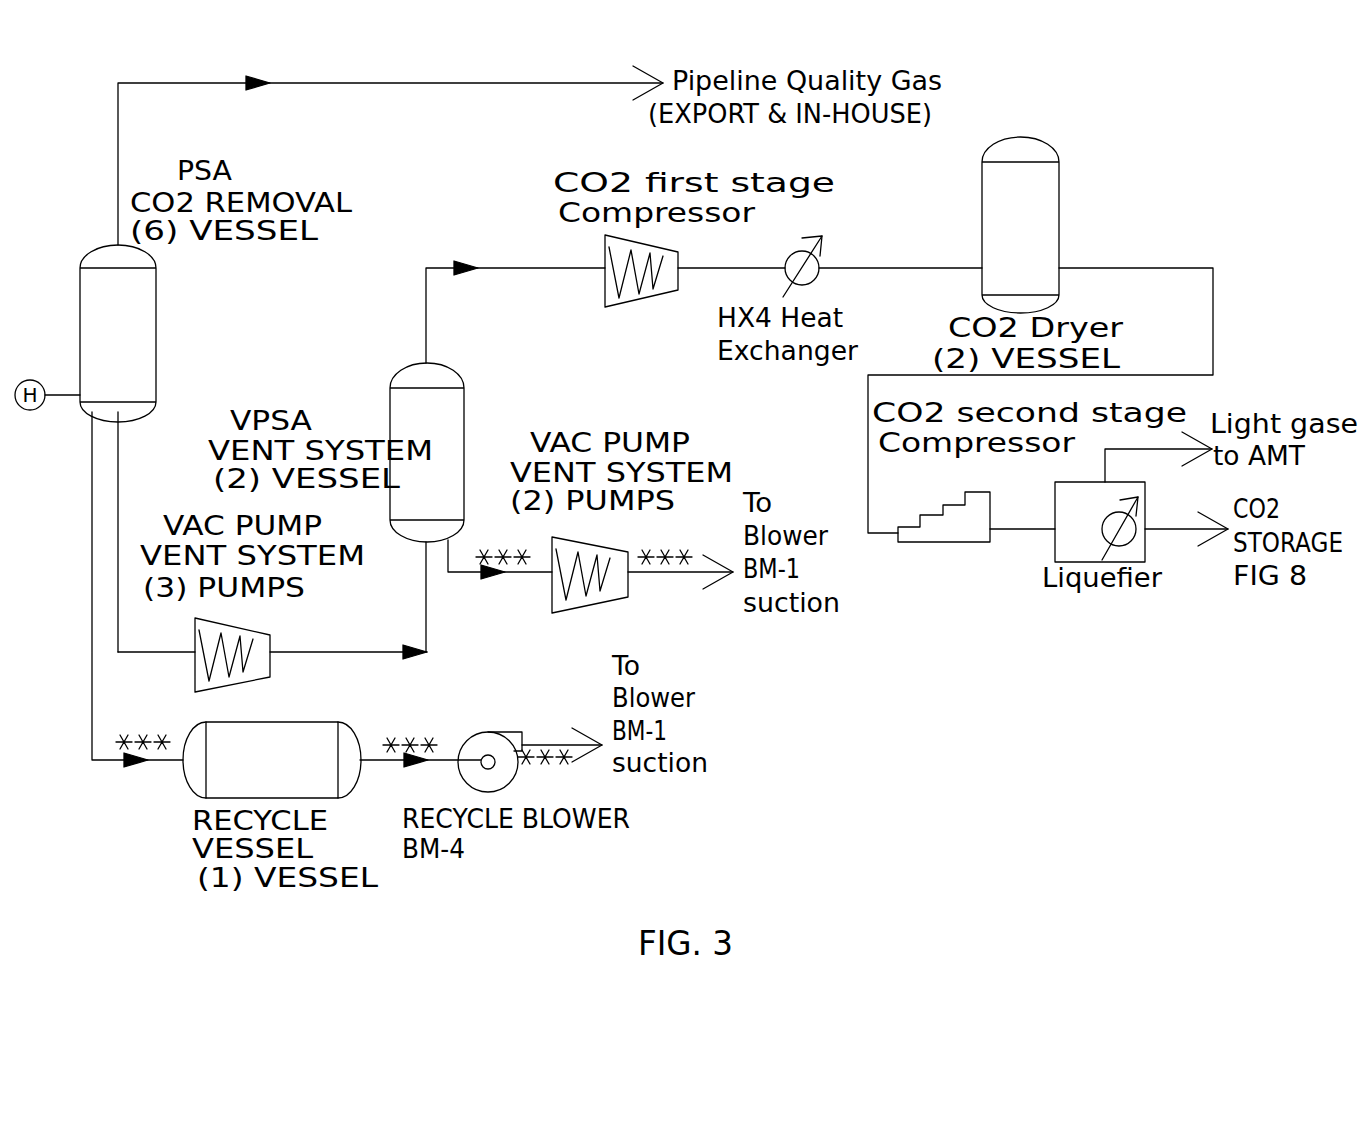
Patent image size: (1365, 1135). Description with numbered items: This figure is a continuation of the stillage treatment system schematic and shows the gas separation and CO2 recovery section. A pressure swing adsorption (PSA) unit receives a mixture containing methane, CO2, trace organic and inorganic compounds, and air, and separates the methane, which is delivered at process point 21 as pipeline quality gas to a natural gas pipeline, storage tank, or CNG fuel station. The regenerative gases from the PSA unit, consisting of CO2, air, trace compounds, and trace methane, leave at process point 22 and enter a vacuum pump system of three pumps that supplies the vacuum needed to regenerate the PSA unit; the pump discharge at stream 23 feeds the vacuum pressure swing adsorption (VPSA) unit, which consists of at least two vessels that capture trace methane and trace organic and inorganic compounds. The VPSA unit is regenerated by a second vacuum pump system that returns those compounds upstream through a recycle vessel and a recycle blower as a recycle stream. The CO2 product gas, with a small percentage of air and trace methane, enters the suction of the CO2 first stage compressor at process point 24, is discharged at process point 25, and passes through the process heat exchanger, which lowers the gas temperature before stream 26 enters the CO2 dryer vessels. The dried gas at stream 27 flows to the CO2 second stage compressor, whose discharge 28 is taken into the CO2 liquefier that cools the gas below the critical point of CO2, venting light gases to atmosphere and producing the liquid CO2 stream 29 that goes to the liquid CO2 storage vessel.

The process point 21 is at (390, 141).
The process point 22 is at (156, 632).
The vacuum pump vent outlet stream 23 is at (348, 600).
The process point 24 is at (515, 293).
The process point 25 is at (731, 246).
The HX4 heat exchanger outlet stream 26 is at (900, 246).
The CO2 dryer outlet stream 27 is at (1040, 378).
The CO2 second stage compressor discharge pressure 28 is at (1022, 508).
The liquid CO2 stream 29 is at (1186, 516).